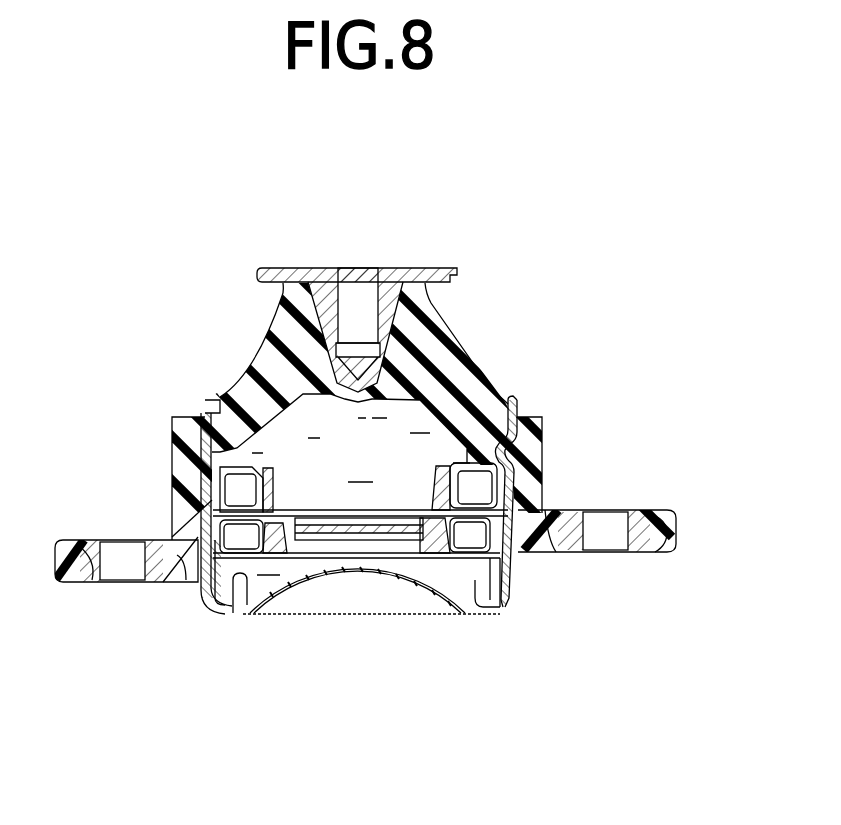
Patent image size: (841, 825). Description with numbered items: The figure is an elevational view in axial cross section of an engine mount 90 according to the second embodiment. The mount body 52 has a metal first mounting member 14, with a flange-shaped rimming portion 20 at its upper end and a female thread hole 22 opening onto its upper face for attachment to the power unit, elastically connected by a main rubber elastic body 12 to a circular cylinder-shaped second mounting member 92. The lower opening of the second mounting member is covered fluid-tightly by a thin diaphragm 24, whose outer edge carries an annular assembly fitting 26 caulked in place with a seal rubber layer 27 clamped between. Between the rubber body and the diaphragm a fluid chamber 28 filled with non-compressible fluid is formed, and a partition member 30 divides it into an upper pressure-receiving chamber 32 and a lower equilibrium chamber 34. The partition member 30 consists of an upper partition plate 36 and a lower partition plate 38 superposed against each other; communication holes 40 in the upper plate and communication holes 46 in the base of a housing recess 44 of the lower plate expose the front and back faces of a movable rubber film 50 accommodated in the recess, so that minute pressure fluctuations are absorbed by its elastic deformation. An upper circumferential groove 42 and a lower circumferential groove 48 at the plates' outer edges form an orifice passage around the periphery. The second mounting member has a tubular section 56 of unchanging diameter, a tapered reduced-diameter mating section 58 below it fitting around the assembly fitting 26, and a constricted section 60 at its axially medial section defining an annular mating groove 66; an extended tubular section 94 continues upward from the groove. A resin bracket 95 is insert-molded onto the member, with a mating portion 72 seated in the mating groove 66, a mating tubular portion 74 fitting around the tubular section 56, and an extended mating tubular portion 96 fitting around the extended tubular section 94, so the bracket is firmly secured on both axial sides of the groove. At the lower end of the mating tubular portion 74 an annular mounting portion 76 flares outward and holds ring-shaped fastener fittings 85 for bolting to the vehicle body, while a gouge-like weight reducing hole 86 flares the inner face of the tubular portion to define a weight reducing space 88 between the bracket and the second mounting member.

The main rubber elastic body 12 is at (256, 377).
The first mounting member 14 is at (360, 306).
The rimming portion 20 is at (282, 270).
The female thread hole 22 is at (345, 272).
The diaphragm 24 is at (283, 592).
The assembly fitting 26 is at (513, 580).
The seal rubber layer 27 is at (213, 497).
The fluid chamber 28 is at (341, 430).
The partition member 30 is at (368, 505).
The pressure-receiving chamber 32 is at (230, 402).
The equilibrium chamber 34 is at (447, 560).
The upper partition plate 36 is at (455, 505).
The lower partition plate 38 is at (425, 553).
The communication holes 40 is at (307, 510).
The upper circumferential groove 42 is at (463, 425).
The housing recess 44 is at (333, 540).
The communication holes 46 is at (396, 560).
The lower circumferential groove 48 is at (250, 545).
The movable rubber film 50 is at (335, 518).
The mount body 52 is at (197, 503).
The tubular section 56 is at (520, 495).
The reduced-diameter mating section 58 is at (520, 552).
The constricted section 60 is at (522, 445).
The mating groove 66 is at (200, 445).
The mating portion 72 is at (532, 456).
The mating tubular portion 74 is at (190, 478).
The mounting portion 76 is at (675, 525).
The fastener fittings 85 is at (92, 556).
The weight reducing hole 86 is at (177, 555).
The weight reducing space 88 is at (580, 560).
The engine mount 90 is at (505, 328).
The second mounting member 92 is at (522, 478).
The extended tubular section 94 is at (522, 404).
The resin bracket 95 is at (168, 452).
The extended mating tubular portion 96 is at (185, 420).